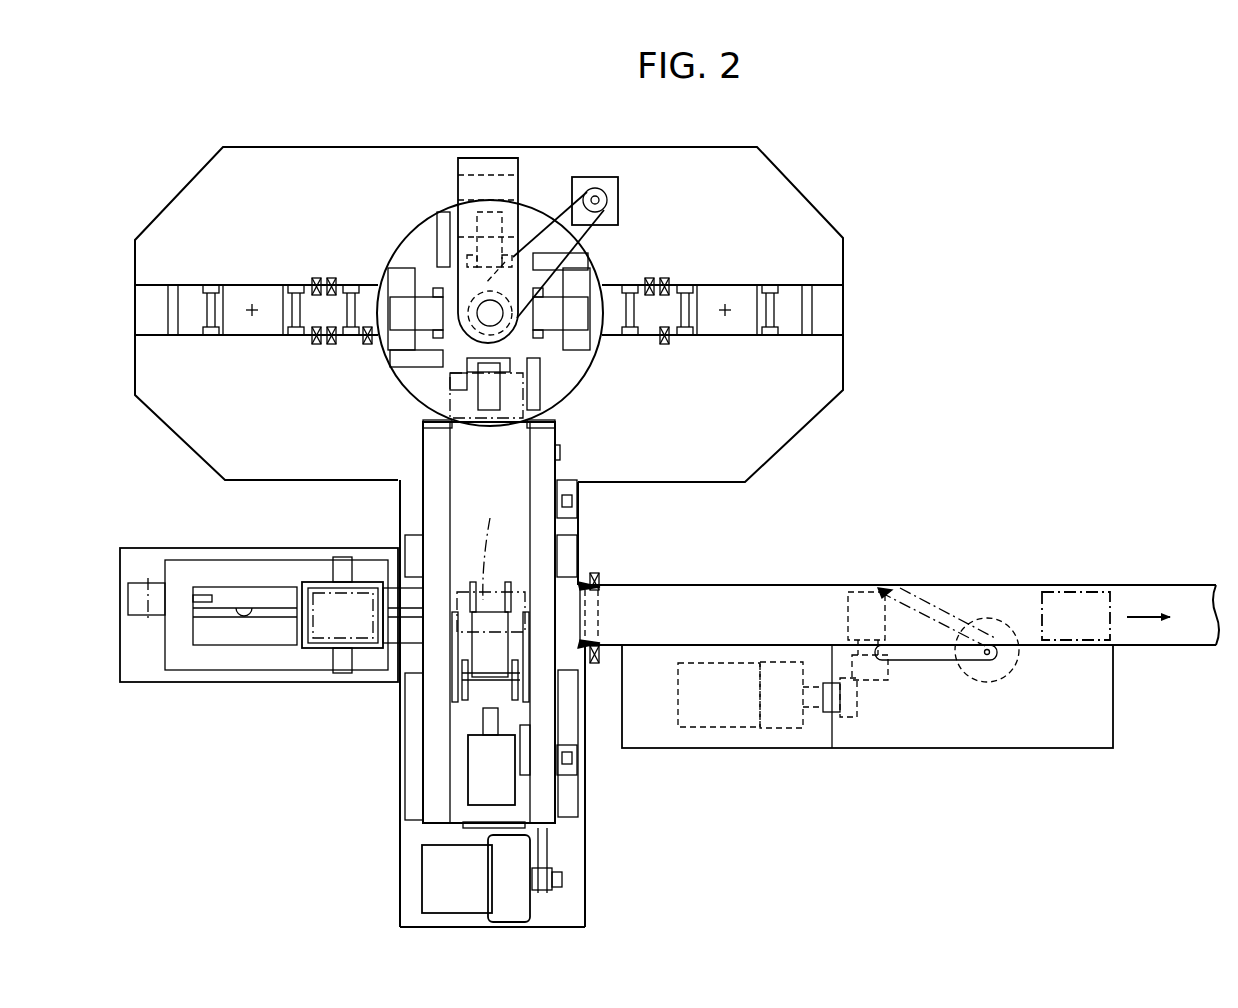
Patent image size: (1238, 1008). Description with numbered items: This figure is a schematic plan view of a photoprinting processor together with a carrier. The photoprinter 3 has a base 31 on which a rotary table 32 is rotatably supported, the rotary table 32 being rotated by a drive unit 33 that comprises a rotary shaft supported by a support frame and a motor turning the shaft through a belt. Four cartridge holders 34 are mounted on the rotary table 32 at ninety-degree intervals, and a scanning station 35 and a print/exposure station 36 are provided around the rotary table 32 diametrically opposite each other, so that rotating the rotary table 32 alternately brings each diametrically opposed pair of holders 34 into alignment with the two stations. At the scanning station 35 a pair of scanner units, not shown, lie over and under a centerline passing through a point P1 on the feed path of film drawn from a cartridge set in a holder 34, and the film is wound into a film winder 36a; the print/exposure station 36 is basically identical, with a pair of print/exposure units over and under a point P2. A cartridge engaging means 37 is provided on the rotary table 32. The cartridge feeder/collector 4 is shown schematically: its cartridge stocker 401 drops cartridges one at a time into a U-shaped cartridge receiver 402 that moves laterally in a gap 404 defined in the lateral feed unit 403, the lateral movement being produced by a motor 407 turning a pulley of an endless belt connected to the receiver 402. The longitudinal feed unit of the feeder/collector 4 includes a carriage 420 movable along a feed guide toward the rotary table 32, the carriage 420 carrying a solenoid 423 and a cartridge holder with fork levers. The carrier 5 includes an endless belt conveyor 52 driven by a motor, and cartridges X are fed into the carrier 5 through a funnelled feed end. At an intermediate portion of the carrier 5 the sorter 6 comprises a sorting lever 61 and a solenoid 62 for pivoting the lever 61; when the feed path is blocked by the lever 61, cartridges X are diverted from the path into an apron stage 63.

The photoprinter 3 is at (833, 204).
The base 31 is at (312, 195).
The rotary table 32 is at (417, 232).
The drive unit 33 is at (543, 193).
The cartridge holders 34 is at (395, 283).
The scanning station 35 is at (292, 278).
The print/exposure station 36 is at (700, 272).
The film winder 36a is at (150, 312).
The cartridge engaging means 37 is at (488, 400).
The cartridge feeder/collector 4 is at (372, 746).
The cartridge stocker 401 is at (318, 650).
The cartridge receiver 402 is at (287, 612).
The lateral feed unit 403 is at (220, 578).
The gap 404 is at (251, 614).
The motor 407 is at (146, 578).
The carriage 420 is at (490, 638).
The solenoid 423 is at (496, 790).
The carrier 5 is at (1168, 632).
The endless belt conveyor 52 is at (752, 605).
The sorter 6 is at (900, 670).
The sorting lever 61 is at (935, 653).
The solenoid 62 is at (998, 620).
The apron stage 63 is at (1022, 712).
The point on the feed path P1 is at (252, 310).
The point at print/exposure station P2 is at (725, 312).
The cartridges X is at (1088, 605).